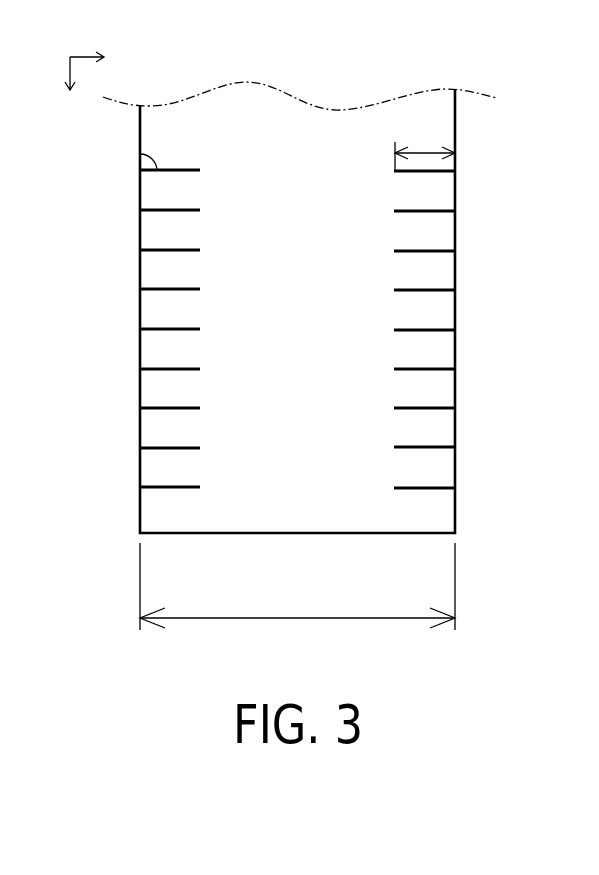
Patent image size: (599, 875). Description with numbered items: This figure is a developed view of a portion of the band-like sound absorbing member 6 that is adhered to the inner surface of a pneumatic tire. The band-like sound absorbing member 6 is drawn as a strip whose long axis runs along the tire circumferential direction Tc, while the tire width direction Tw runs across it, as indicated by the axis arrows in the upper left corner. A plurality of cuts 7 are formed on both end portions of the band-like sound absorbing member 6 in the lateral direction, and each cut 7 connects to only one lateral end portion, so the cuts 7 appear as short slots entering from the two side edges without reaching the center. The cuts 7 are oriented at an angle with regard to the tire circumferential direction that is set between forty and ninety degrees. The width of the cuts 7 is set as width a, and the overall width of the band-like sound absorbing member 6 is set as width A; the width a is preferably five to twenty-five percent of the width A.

The band-like sound absorbing member 6 is at (290, 232).
The cuts 7 is at (172, 250).
The width of the cuts a is at (430, 150).
The width of the band-like sound absorbing member A is at (297, 586).
The tire width direction Tw is at (103, 58).
The tire circumferential direction Tc is at (67, 88).